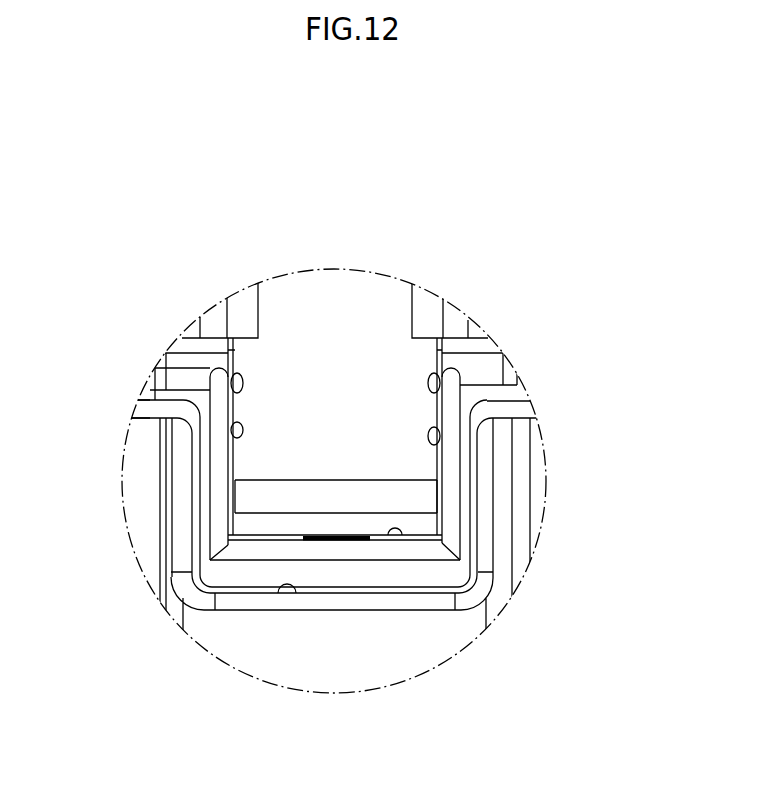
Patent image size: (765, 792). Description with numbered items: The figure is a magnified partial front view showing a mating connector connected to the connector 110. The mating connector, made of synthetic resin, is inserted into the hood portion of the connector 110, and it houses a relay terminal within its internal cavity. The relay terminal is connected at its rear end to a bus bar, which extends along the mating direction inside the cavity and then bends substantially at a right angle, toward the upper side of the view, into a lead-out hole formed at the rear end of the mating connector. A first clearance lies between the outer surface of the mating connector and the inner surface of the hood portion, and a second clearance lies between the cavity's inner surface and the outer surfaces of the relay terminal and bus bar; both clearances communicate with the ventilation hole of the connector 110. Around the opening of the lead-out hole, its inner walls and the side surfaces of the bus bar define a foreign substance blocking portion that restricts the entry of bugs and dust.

The connector 110 is at (324, 517).